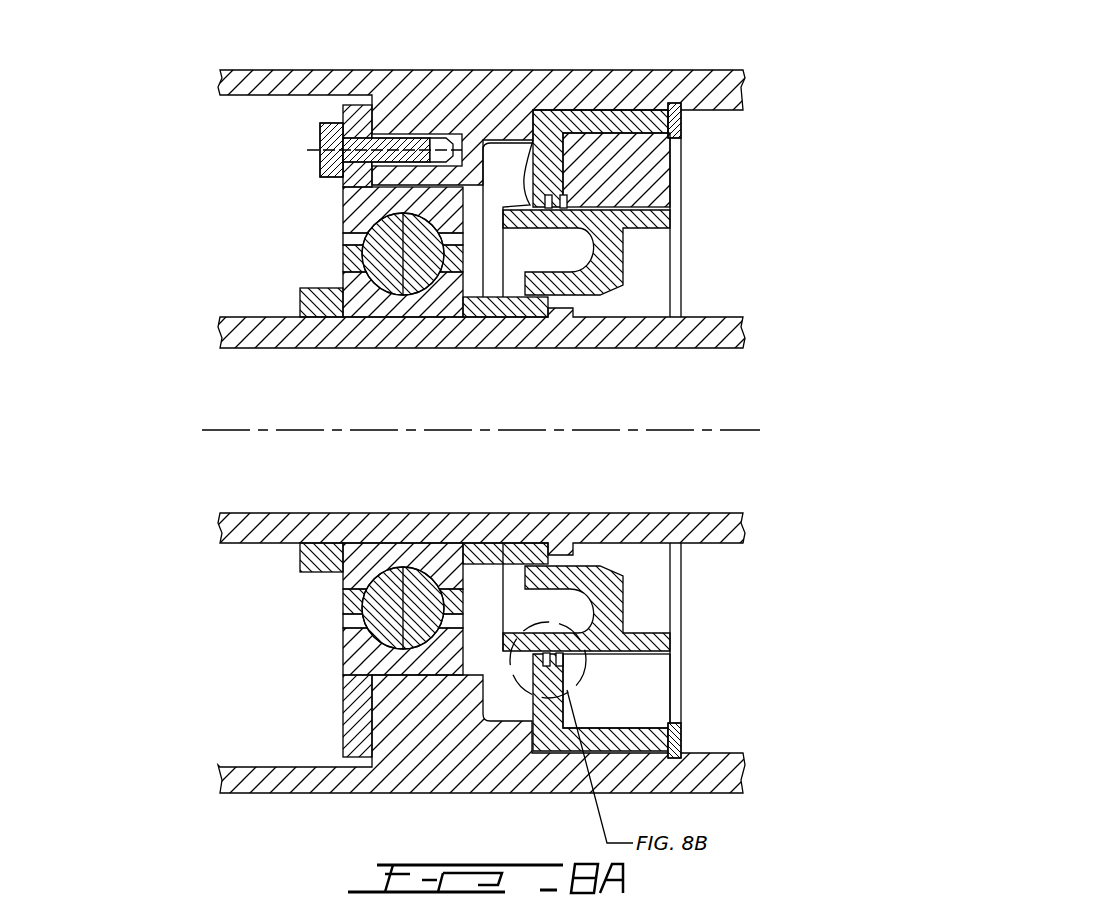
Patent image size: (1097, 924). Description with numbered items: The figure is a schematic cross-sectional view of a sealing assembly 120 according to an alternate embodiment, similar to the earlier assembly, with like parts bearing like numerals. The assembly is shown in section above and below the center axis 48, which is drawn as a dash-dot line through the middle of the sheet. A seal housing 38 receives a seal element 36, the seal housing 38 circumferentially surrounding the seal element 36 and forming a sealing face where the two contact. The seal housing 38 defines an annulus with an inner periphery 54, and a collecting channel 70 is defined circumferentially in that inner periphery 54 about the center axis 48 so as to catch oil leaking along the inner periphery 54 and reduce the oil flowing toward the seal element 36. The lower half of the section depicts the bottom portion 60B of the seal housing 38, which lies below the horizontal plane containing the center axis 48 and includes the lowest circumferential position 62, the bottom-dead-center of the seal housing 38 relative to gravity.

The sealing assembly 120 is at (146, 114).
The inner periphery 54 is at (530, 200).
The seal housing 38 is at (642, 113).
The collecting channel 70 is at (568, 193).
The center axis 48 is at (230, 430).
The bottom portion 60B is at (786, 576).
The lowest circumferential position 62 is at (515, 661).
The seal element 36 is at (637, 692).